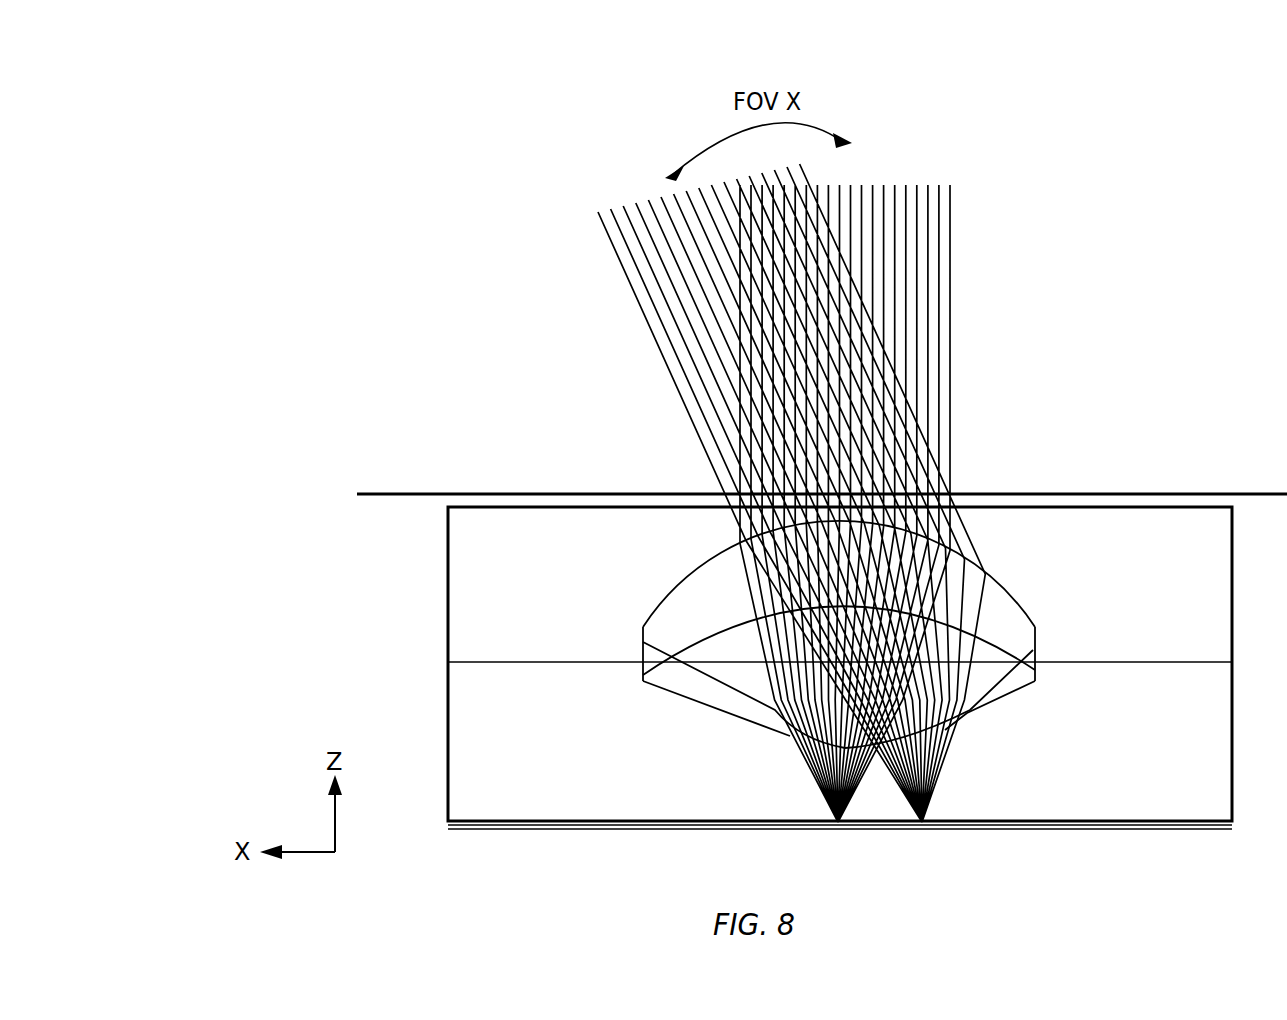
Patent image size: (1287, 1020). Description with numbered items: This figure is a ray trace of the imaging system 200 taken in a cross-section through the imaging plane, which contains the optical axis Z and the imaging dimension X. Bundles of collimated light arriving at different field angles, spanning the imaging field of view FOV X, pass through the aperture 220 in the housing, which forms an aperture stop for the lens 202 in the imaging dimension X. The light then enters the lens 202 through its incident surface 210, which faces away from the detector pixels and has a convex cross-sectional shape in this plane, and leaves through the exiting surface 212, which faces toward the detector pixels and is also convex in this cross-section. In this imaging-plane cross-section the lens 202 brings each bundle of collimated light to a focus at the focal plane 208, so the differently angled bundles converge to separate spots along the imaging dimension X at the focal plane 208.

The imaging system 200 is at (172, 94).
The lens 202 is at (724, 637).
The focal plane 208 is at (778, 818).
The incident surface 210 is at (685, 588).
The exiting surface 212 is at (718, 703).
The aperture 220 is at (711, 478).